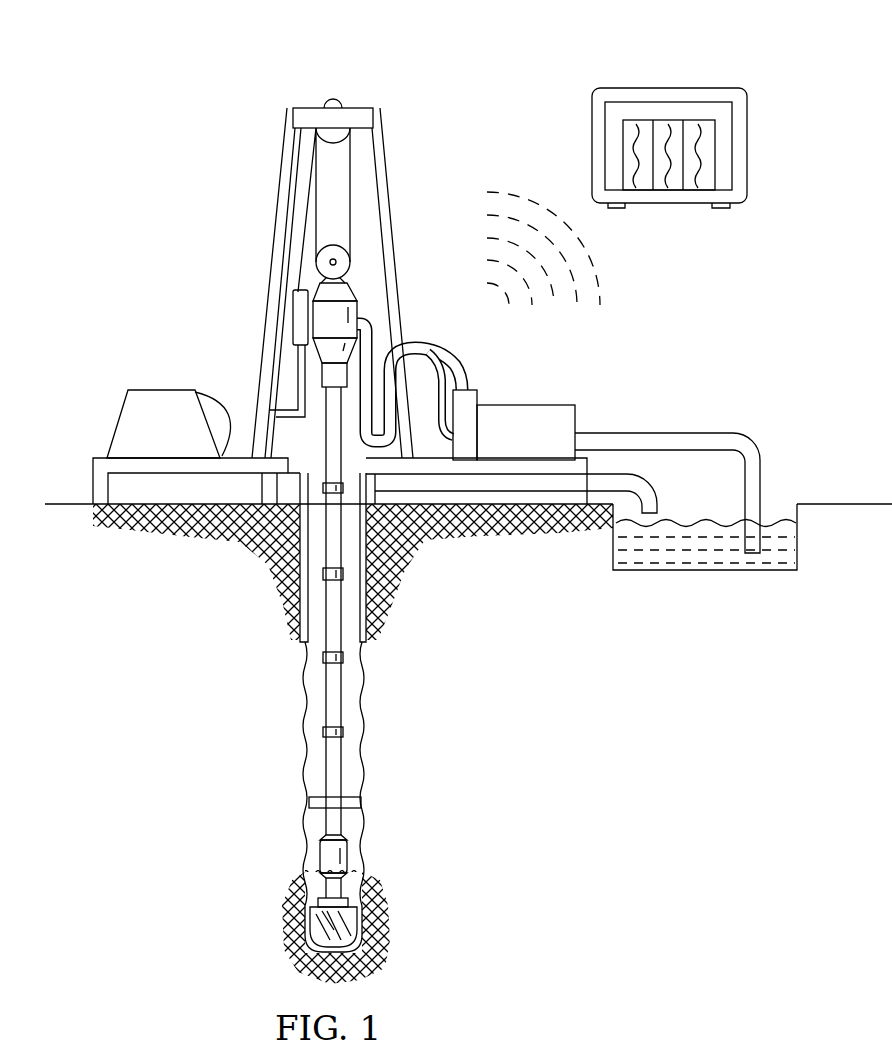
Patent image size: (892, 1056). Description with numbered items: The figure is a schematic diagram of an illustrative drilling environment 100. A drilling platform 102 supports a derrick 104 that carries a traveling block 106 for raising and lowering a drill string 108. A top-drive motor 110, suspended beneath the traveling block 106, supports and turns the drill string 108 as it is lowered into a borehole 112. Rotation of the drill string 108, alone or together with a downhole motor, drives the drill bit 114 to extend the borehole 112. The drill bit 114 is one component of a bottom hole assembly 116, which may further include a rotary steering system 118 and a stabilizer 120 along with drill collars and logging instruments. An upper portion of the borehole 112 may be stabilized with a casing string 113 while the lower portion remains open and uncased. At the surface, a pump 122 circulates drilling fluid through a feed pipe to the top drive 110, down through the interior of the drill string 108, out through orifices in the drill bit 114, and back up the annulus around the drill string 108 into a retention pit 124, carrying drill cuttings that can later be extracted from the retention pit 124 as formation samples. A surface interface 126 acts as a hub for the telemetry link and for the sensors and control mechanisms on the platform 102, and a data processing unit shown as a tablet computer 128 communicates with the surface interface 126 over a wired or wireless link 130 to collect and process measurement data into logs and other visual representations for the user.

The drilling environment 100 is at (188, 81).
The drilling platform 102 is at (92, 472).
The derrick 104 is at (280, 163).
The traveling block 106 is at (316, 262).
The drill string 108 is at (322, 606).
The top-drive motor 110 is at (358, 310).
The borehole 112 is at (316, 556).
The casing string 113 is at (300, 523).
The drill bit 114 is at (356, 932).
The bottom hole assembly 116 is at (318, 822).
The rotary steering system 118 is at (348, 857).
The stabilizer 120 is at (316, 792).
The pump 122 is at (577, 412).
The retention pit 124 is at (700, 562).
The surface interface 126 is at (477, 393).
The tablet computer 128 is at (677, 88).
The wired or wireless link 130 is at (520, 197).